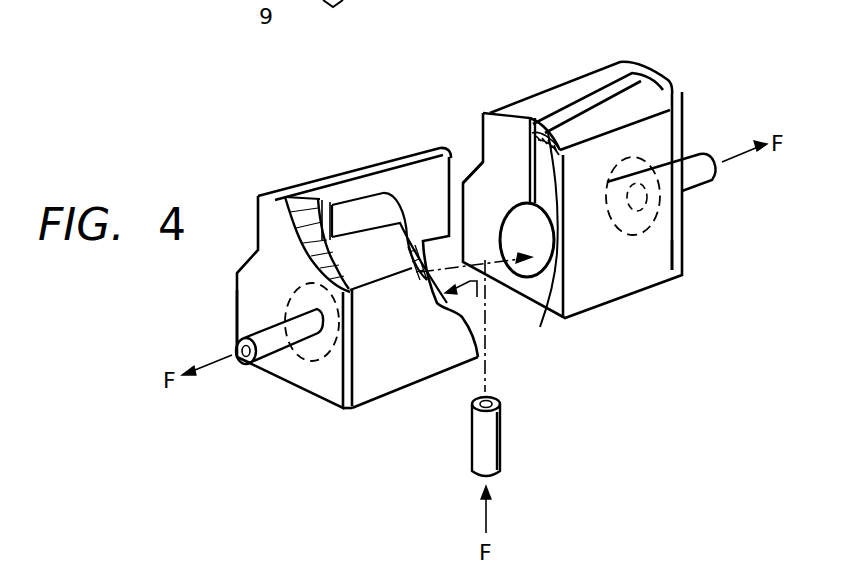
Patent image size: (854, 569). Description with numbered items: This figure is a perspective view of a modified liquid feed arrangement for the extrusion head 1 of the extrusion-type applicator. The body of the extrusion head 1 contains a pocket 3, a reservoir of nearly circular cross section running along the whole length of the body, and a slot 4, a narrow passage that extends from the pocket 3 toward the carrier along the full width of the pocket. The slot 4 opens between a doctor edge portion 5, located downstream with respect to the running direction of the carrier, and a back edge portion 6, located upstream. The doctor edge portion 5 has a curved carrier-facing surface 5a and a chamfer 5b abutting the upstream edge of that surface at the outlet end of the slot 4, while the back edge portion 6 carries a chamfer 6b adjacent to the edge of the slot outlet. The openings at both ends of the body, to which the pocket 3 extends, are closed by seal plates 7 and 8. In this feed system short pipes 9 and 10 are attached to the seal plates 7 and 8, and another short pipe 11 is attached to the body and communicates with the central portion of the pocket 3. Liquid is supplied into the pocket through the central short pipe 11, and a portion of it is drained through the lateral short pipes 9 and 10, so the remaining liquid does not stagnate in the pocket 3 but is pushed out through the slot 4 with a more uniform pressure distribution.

The extrusion head 1 is at (375, 147).
The pocket 3 is at (522, 272).
The slot 4 is at (523, 143).
The doctor edge portion 5 is at (497, 177).
The carrier-facing surface 5a is at (400, 155).
The chamfer 5b is at (349, 190).
The back edge portion 6 is at (530, 278).
The chamfer 6b is at (320, 197).
The seal plate 7 is at (250, 280).
The seal plate 8 is at (677, 278).
The short pipe 9 is at (279, 340).
The short pipe 10 is at (703, 163).
The short pipe 11 is at (500, 420).